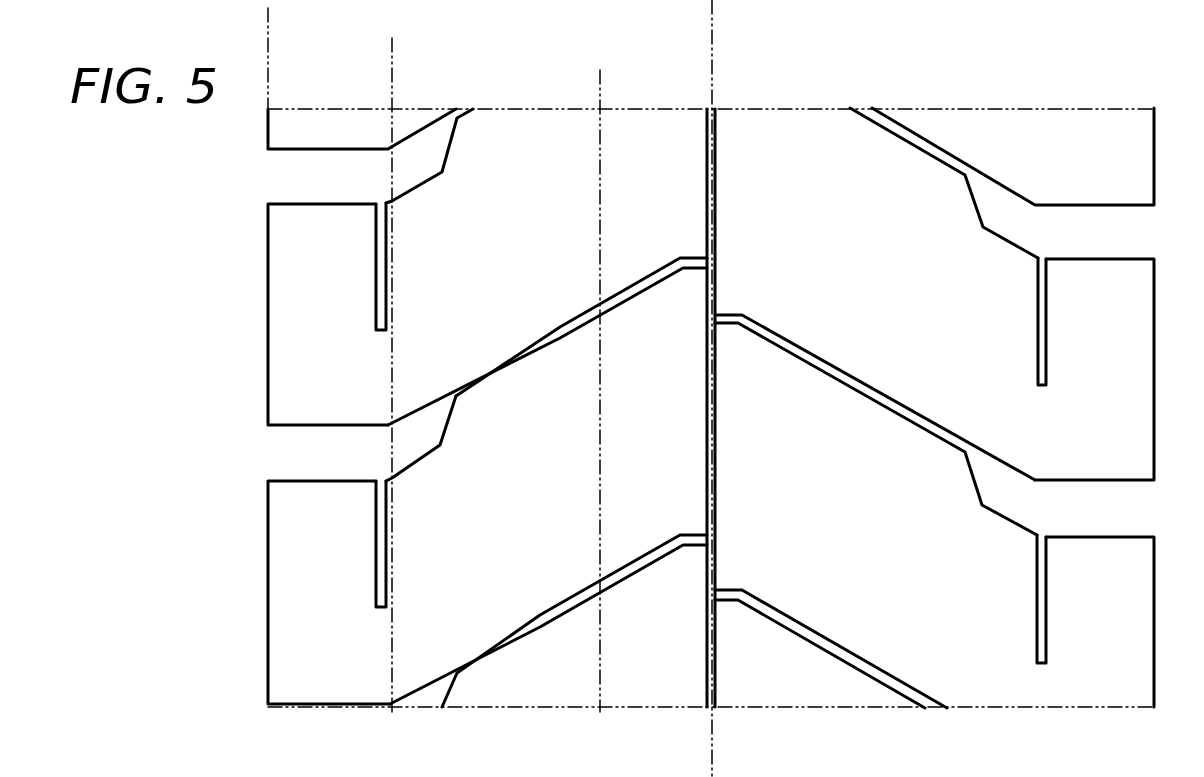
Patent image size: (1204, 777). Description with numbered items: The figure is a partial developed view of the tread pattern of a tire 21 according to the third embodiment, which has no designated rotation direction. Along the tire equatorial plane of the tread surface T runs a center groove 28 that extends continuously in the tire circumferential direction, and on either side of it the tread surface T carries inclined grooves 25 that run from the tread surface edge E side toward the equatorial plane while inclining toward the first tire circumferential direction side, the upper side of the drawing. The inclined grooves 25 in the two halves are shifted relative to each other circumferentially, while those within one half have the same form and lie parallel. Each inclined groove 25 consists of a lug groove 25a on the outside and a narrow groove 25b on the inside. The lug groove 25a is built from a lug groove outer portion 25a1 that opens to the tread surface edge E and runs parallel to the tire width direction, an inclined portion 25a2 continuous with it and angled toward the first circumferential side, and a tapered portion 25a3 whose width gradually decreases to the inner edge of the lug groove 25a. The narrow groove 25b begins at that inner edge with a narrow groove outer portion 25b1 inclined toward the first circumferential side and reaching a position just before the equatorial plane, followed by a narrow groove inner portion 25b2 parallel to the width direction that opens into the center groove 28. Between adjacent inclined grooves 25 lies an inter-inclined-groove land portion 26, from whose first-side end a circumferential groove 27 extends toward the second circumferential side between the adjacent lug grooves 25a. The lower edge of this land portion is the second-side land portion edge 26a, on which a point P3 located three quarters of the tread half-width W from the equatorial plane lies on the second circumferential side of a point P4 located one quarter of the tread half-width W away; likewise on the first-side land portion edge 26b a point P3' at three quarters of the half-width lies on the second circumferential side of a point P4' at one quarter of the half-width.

The tire 21 is at (1075, 65).
The inclined groove 25 is at (512, 303).
The lug groove 25a is at (415, 430).
The narrow groove 25b is at (505, 363).
The lug groove outer portion 25a1 is at (1098, 508).
The inclined portion 25a2 is at (1012, 493).
The tapered portion 25a3 is at (983, 465).
The narrow groove outer portion 25b1 is at (811, 355).
The narrow groove inner portion 25b2 is at (738, 318).
The inter-inclined-groove land portion 26 is at (522, 517).
The second-side land portion edge 26a is at (494, 643).
The first-side land portion edge 26b is at (483, 383).
The circumferential groove 27 is at (380, 272).
The center groove 28 is at (718, 158).
The tread surface edge E is at (268, 283).
The tread surface T is at (824, 153).
The point P3 is at (363, 675).
The point P3' is at (422, 495).
The point P4 is at (575, 561).
The point P4' is at (634, 342).
The tread half-width W is at (710, 17).